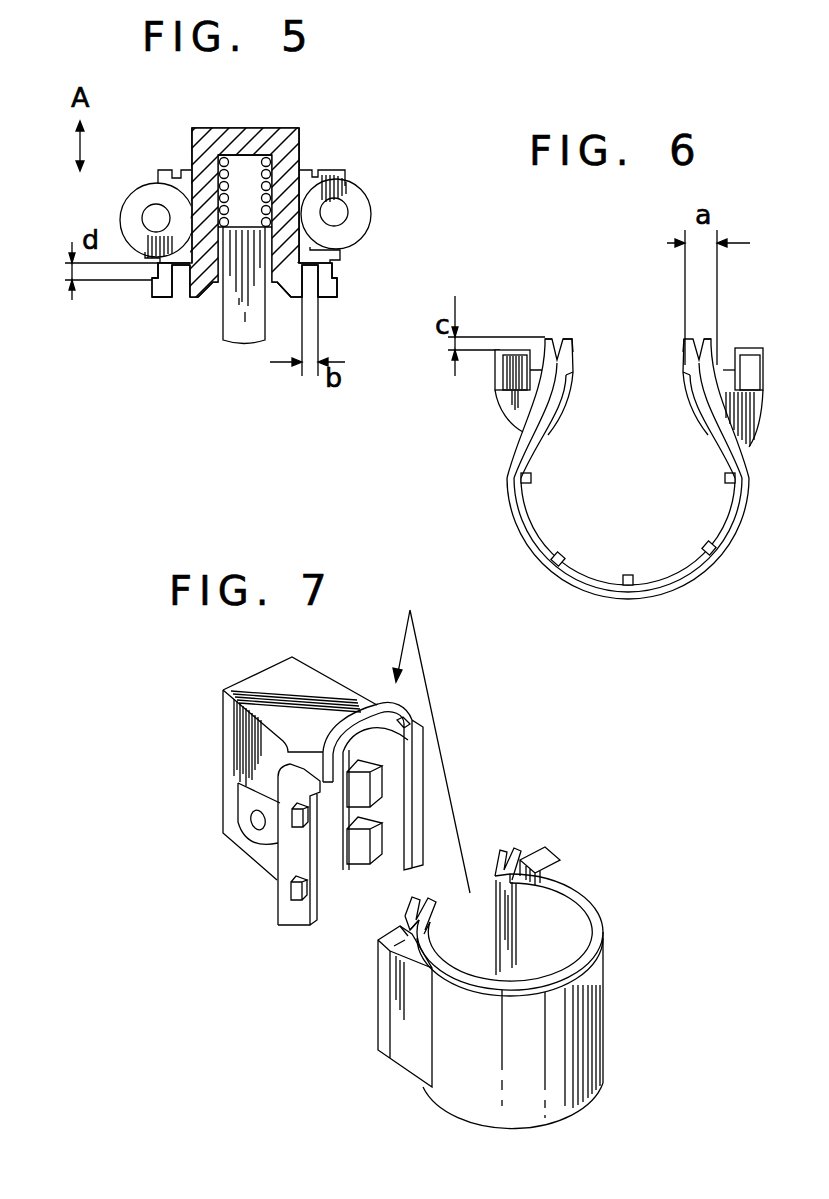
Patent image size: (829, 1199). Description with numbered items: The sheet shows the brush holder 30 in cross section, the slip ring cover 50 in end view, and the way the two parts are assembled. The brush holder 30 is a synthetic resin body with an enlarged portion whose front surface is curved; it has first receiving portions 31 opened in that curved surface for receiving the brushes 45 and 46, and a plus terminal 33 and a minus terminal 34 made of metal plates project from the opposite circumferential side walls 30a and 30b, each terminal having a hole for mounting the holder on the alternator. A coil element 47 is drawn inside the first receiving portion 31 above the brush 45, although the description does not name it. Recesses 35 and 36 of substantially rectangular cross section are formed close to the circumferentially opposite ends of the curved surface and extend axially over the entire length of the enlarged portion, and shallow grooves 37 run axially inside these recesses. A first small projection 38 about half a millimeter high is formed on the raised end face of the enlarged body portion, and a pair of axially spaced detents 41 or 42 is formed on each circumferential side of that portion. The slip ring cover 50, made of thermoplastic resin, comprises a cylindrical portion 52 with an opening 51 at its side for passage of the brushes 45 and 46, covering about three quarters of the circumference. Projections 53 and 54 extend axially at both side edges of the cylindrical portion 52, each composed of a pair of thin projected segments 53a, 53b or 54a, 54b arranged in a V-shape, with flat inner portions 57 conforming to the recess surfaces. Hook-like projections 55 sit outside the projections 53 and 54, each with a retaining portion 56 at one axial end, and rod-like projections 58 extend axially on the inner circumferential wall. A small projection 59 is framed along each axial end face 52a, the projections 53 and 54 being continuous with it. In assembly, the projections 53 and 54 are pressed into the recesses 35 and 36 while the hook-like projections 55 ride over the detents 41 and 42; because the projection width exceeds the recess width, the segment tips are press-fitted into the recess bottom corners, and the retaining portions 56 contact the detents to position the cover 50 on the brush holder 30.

In FIG. 5, the brush holder 30 is at (250, 230).
In FIG. 7, the brush holder 30 is at (307, 798).
In FIG. 5, the circumferential side wall 30a is at (192, 150).
In FIG. 5, the circumferential side wall 30b is at (302, 152).
In FIG. 5, the first receiving portion 31 is at (250, 166).
In FIG. 5, the plus terminal 33 is at (157, 196).
In FIG. 7, the plus terminal 33 is at (246, 815).
In FIG. 5, the minus terminal 34 is at (343, 192).
In FIG. 5, the recess 35 is at (181, 290).
In FIG. 7, the recess 35 is at (290, 765).
In FIG. 5, the recess 36 is at (309, 285).
In FIG. 7, the recess 36 is at (410, 722).
In FIG. 5, the shallow groove 37 is at (206, 292).
In FIG. 7, the first small projection 38 is at (323, 756).
In FIG. 5, the detent 41 is at (162, 286).
In FIG. 7, the detent 41 is at (296, 819).
In FIG. 5, the detent 42 is at (331, 283).
In FIG. 5, the brush 45 is at (233, 336).
In FIG. 7, the brush 45 is at (362, 762).
In FIG. 7, the brush 46 is at (363, 858).
In FIG. 5, the coil spring 47 is at (230, 170).
In FIG. 6, the slip ring cover 50 is at (622, 442).
In FIG. 7, the slip ring cover 50 is at (506, 953).
In FIG. 6, the opening 51 is at (630, 358).
In FIG. 7, the opening 51 is at (470, 893).
In FIG. 6, the cylindrical portion 52 is at (558, 577).
In FIG. 6, the axial end face 52a is at (730, 540).
In FIG. 6, the projection 53 is at (696, 324).
In FIG. 7, the projection 53 is at (410, 897).
In FIG. 6, the projected segment 53a is at (716, 340).
In FIG. 6, the projected segment 53b is at (688, 344).
In FIG. 6, the projection 54 is at (552, 301).
In FIG. 7, the projection 54 is at (514, 866).
In FIG. 6, the projected segment 54a is at (570, 347).
In FIG. 6, the projected segment 54b is at (548, 345).
In FIG. 6, the hook-like projection 55 is at (500, 366).
In FIG. 7, the hook-like projection 55 is at (417, 1040).
In FIG. 6, the retaining portion 56 is at (508, 401).
In FIG. 7, the retaining portion 56 is at (401, 944).
In FIG. 6, the inner portion 57 is at (571, 392).
In FIG. 7, the inner portion 57 is at (507, 917).
In FIG. 6, the rod-like projection 58 is at (633, 573).
In FIG. 6, the small projection 59 is at (690, 571).
In FIG. 7, the small projection 59 is at (592, 921).